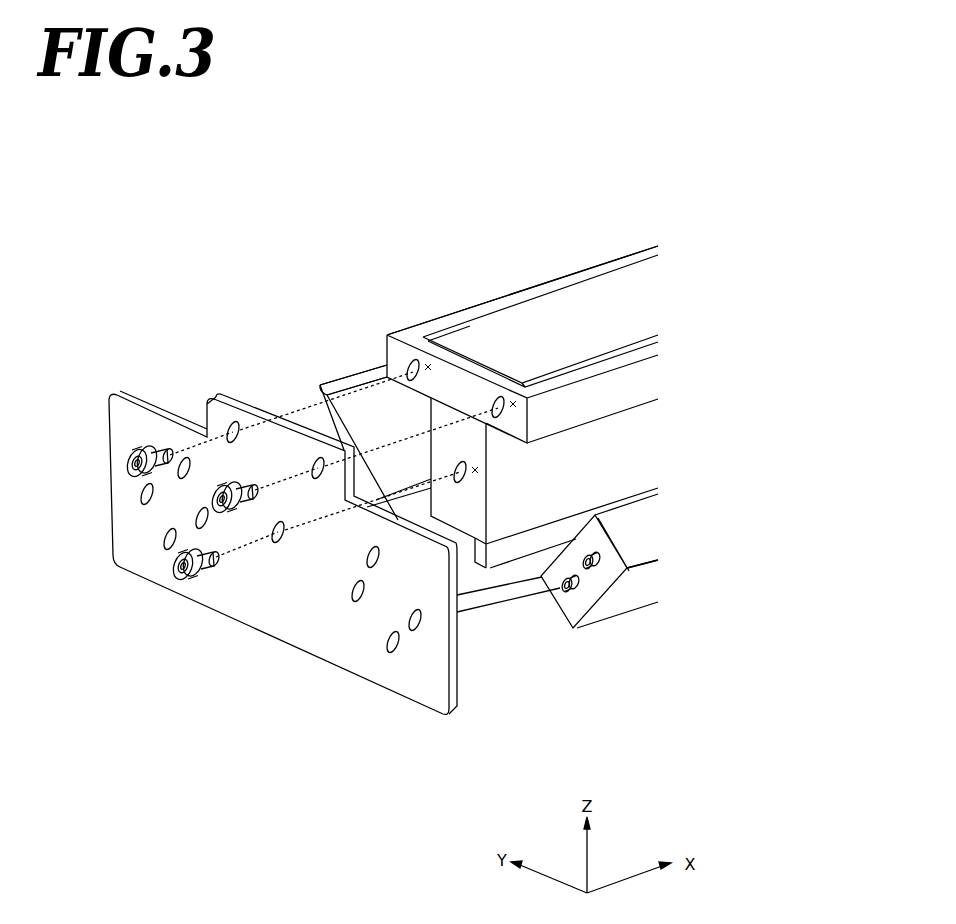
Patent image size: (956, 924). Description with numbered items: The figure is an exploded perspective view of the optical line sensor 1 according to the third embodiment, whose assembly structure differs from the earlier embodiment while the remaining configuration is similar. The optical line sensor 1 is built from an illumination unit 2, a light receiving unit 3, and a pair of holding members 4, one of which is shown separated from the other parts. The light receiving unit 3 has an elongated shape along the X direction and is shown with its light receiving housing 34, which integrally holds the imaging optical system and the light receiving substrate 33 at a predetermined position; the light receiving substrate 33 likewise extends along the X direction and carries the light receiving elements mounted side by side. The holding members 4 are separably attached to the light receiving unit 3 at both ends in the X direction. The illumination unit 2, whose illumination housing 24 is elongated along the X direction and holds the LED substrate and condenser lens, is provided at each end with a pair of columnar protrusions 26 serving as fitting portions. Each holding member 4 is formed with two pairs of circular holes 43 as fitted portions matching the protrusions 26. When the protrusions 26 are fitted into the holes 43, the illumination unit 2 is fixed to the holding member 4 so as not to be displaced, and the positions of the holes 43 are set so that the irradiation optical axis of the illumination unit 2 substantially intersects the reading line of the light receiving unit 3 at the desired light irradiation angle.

The optical line sensor 1 is at (468, 160).
The illumination unit 2 is at (346, 374).
The light receiving unit 3 is at (620, 252).
The holding member 4 is at (273, 640).
The illumination housing 24 is at (613, 612).
The protrusion 26 is at (318, 400).
The light receiving substrate 33 is at (553, 294).
The light receiving housing 34 is at (483, 303).
The hole 43 is at (140, 496).